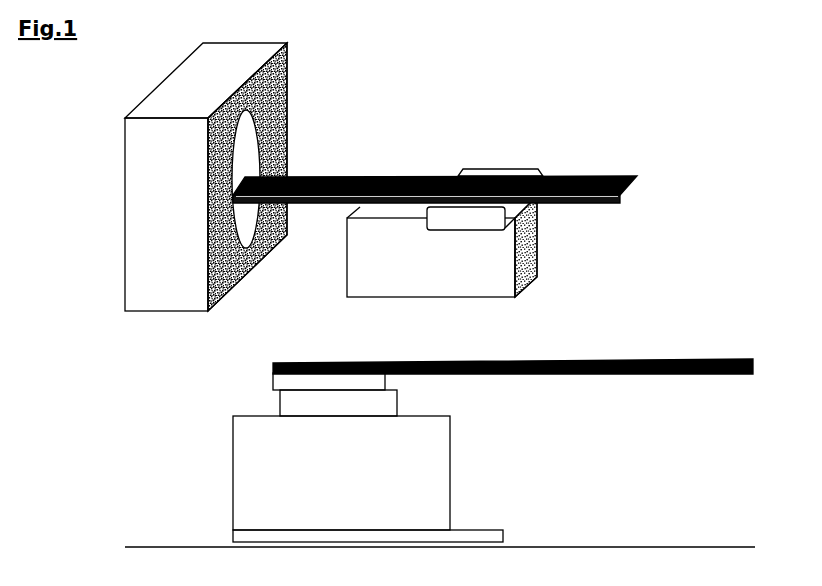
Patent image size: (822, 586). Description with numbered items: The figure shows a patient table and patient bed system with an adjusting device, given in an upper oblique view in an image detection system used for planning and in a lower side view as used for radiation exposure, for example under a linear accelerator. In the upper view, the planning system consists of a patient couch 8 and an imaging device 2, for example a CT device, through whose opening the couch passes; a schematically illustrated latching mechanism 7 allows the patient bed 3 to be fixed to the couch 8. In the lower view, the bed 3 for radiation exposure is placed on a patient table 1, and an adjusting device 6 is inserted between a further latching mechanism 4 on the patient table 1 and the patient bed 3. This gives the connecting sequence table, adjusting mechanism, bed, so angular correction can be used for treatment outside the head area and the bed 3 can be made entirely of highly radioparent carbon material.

The patient table 1 is at (368, 479).
The imaging device 2 is at (273, 90).
The patient bed 3 is at (585, 202).
The further latching mechanism 4 is at (300, 402).
The adjusting device 6 is at (342, 383).
The latching mechanism 7 is at (490, 168).
The patient couch 8 is at (387, 257).